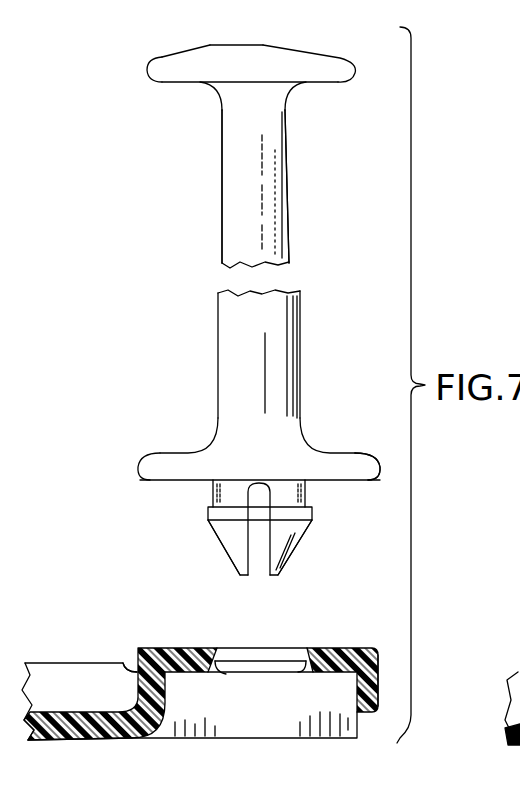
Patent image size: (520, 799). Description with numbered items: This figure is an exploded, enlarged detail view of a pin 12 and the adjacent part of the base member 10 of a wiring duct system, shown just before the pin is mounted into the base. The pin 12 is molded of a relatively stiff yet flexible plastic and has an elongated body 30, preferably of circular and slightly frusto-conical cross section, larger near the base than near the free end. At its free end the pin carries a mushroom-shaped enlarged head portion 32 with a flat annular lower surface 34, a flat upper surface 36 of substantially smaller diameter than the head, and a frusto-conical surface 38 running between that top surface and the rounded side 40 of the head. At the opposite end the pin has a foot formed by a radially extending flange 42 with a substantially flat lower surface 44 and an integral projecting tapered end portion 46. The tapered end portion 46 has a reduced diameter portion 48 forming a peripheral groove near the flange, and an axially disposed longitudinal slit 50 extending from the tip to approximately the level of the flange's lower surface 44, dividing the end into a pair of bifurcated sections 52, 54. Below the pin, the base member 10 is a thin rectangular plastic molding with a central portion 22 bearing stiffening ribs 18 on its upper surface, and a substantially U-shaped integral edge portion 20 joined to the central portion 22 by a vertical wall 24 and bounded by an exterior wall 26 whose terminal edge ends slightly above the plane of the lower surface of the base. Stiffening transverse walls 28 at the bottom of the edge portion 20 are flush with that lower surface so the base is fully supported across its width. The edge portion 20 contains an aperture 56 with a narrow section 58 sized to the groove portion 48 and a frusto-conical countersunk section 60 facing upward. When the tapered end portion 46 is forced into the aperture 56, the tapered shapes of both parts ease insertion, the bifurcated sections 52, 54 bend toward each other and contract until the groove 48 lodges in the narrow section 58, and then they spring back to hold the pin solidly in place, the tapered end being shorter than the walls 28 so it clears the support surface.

The base member portion 10 is at (88, 749).
The pin 12 is at (302, 363).
The stiffening rib 18 is at (103, 663).
The edge portion 20 is at (350, 655).
The central portion 22 is at (102, 718).
The vertical wall 24 is at (125, 665).
The exterior wall 26 is at (380, 668).
The stiffening transverse wall 28 is at (270, 738).
The elongated body 30 is at (273, 182).
The enlarged head portion 32 is at (352, 76).
The flat annular lower surface 34 is at (190, 86).
The flat upper surface 36 is at (263, 45).
The frusto-conical surface 38 is at (170, 57).
The rounded side 40 is at (145, 70).
The radially extending flange 42 is at (362, 468).
The flat lower surface 44 is at (355, 482).
The tapered end portion 46 is at (232, 560).
The reduced diameter portion 48 is at (213, 492).
The longitudinal slit 50 is at (262, 556).
The bifurcated section 52 is at (232, 536).
The bifurcated section 54 is at (290, 543).
The aperture 56 is at (298, 672).
The narrow section 58 is at (226, 675).
The frusto-conical countersunk section 60 is at (238, 630).